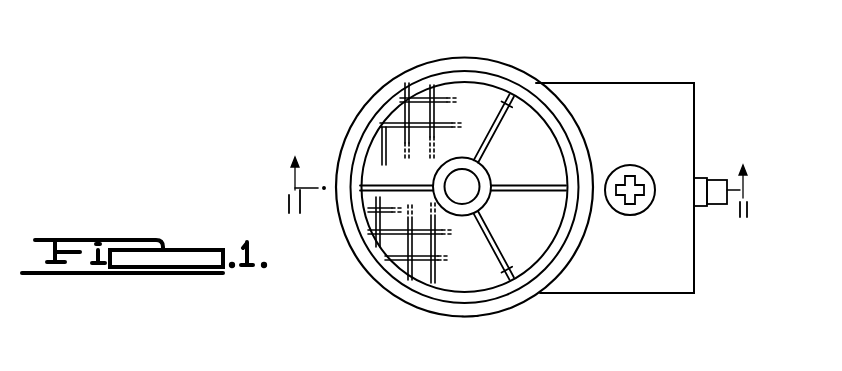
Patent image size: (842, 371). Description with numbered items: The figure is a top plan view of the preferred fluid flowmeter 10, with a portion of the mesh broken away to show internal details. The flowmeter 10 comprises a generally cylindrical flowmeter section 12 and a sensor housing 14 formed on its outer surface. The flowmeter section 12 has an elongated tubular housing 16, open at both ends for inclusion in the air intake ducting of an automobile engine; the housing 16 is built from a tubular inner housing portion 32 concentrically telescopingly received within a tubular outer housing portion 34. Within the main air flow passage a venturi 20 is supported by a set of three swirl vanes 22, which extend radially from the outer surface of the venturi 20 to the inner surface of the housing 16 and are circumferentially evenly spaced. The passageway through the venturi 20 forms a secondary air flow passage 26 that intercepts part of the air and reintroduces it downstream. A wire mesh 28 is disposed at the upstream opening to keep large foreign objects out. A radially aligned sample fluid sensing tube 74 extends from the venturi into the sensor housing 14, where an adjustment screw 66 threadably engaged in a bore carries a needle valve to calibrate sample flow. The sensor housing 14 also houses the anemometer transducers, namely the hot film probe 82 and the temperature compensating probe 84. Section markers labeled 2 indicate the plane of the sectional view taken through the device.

The flowmeter 10 is at (352, 98).
The flowmeter section 12 is at (410, 306).
The sensor housing 14 is at (614, 293).
The housing 16 is at (480, 58).
The venturi 20 is at (478, 178).
The swirl vanes 22 is at (504, 116).
The secondary air flow passage 26 is at (462, 205).
The wire mesh 28 is at (375, 240).
The inner housing portion 32 is at (498, 292).
The outer housing portion 34 is at (470, 313).
The sample fluid sensing tube 74 is at (515, 193).
The hot film probe 82 is at (700, 178).
The temperature compensating probe 84 is at (630, 215).
The adjustment screw 66 is at (720, 206).
The section line 2- 2 is at (519, 171).